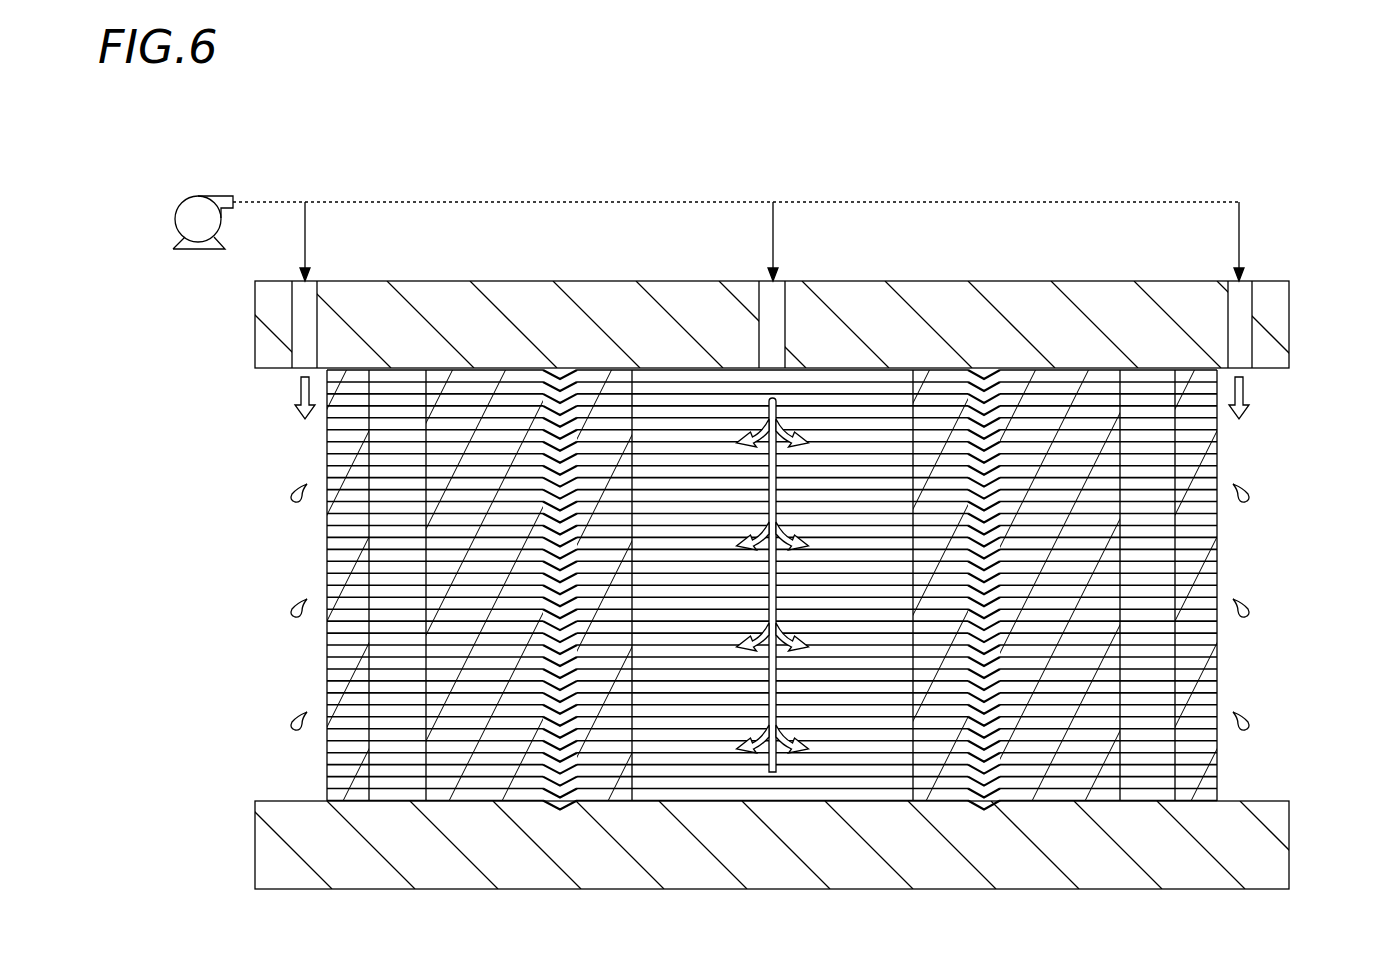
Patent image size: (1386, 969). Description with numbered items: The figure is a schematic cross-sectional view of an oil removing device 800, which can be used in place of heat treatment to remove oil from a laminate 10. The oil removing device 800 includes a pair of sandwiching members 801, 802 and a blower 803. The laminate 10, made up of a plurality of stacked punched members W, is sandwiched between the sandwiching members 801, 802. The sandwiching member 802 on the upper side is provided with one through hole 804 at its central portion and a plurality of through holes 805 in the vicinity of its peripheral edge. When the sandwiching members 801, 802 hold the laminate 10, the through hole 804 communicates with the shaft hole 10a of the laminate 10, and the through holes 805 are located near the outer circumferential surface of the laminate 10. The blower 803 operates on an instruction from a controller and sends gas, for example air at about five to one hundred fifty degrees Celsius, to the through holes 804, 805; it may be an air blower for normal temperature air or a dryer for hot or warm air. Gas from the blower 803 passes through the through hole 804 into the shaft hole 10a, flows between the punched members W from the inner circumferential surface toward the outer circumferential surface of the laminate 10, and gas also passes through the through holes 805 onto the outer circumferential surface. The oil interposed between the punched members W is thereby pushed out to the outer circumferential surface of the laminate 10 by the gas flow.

The oil removing device 800 is at (1255, 153).
The sandwiching member 801 is at (1110, 291).
The sandwiching member 802 is at (1270, 816).
The blower 803 is at (200, 195).
The through hole 804 is at (785, 330).
The through holes 805 is at (317, 330).
The laminate 10 is at (1302, 385).
The shaft hole 10a is at (863, 380).
The punched members W is at (352, 782).